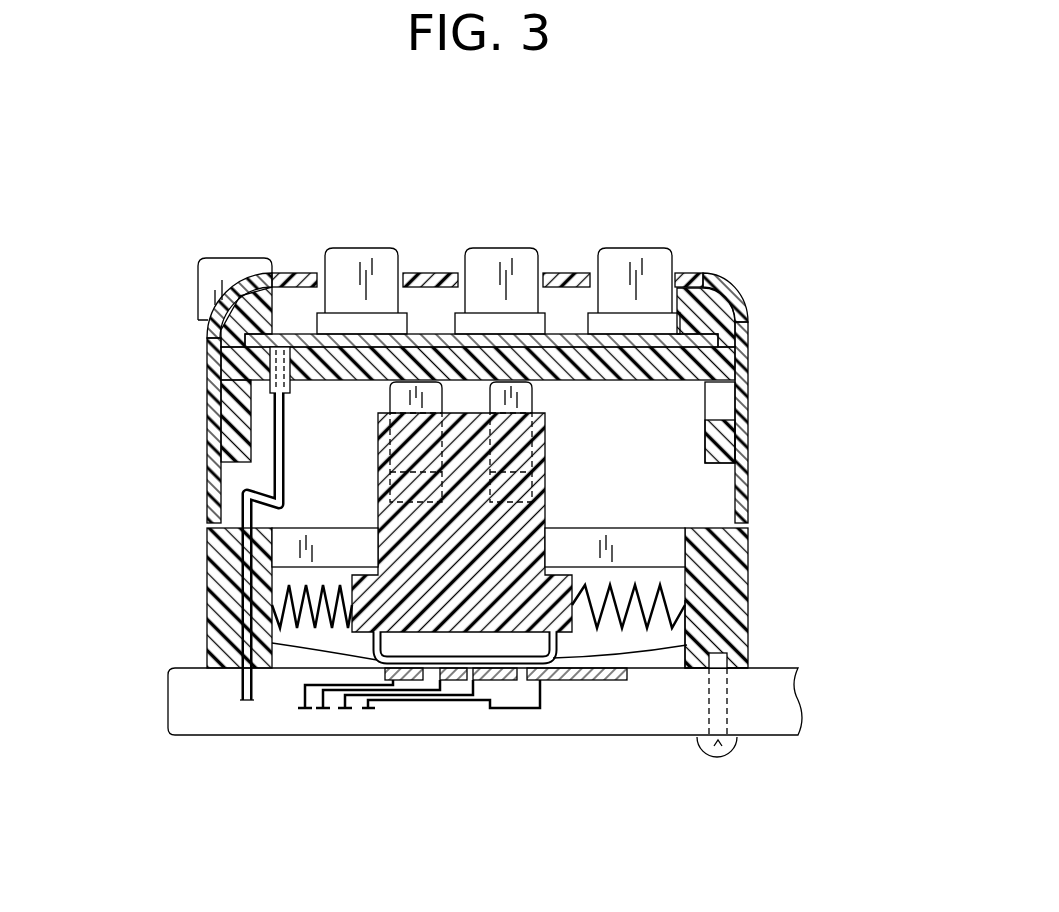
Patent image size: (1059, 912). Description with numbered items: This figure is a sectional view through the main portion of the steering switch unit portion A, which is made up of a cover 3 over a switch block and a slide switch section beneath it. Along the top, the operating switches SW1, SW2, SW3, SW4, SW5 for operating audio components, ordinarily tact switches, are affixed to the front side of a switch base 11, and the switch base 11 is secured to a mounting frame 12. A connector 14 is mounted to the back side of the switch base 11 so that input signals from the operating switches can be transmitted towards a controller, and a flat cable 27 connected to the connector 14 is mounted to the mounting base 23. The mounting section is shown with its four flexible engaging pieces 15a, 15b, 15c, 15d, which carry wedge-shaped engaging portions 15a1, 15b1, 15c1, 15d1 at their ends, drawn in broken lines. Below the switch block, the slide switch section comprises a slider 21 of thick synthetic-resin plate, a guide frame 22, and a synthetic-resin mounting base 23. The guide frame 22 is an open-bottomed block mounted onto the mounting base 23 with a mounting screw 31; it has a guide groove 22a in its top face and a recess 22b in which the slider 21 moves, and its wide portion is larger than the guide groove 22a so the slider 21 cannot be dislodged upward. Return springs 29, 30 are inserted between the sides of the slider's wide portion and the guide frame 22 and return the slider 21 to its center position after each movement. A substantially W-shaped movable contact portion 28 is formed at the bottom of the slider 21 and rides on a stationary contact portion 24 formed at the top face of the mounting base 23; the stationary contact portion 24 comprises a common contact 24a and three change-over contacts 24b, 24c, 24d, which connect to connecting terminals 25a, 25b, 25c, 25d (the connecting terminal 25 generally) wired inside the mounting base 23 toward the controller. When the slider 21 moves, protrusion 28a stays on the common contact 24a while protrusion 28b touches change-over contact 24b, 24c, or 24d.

The steering switch unit portion A is at (471, 462).
The cover 3 is at (705, 278).
The switch base 11 is at (690, 337).
The mounting frame 12 is at (715, 366).
The connector 14 is at (267, 363).
The flexible engaging piece 15a is at (246, 408).
The flexible engaging piece 15c is at (408, 393).
The wedge-shaped engaging portion 15a1 is at (241, 457).
The wedge-shaped engaging portion 15c1 is at (395, 481).
The flexible engaging piece 15b is at (683, 402).
The flexible engaging piece 15d is at (510, 396).
The wedge-shaped engaging portion 15b1 is at (693, 457).
The wedge-shaped engaging portion 15d1 is at (530, 484).
The slider 21 is at (545, 520).
The guide frame 22 is at (702, 569).
The guide groove 22a is at (643, 547).
The recess 22b is at (712, 610).
The mounting base 23 is at (780, 702).
The stationary contact portion 24 is at (541, 756).
The common contact 24a is at (625, 683).
The change-over contact 24b is at (583, 681).
The change-over contact 24c is at (458, 688).
The change-over contact 24d is at (418, 690).
The connecting terminal 25 is at (369, 790).
The connecting terminal 25a is at (451, 762).
The connecting terminal 25b is at (347, 702).
The connecting terminal 25c is at (327, 699).
The connecting terminal 25d is at (303, 699).
The flat cable 27 is at (272, 530).
The movable contact portion 28 is at (483, 724).
The protrusion 28a is at (687, 645).
The protrusion 28b is at (272, 643).
The return spring 29 is at (690, 573).
The return spring 30 is at (272, 584).
The mounting screw 31 is at (727, 752).
The operating switch SW1 is at (370, 273).
The operating switch SW2 is at (508, 273).
The operating switch SW3 is at (633, 273).
The operating switch SW4 is at (253, 247).
The operating switch SW5 is at (223, 260).